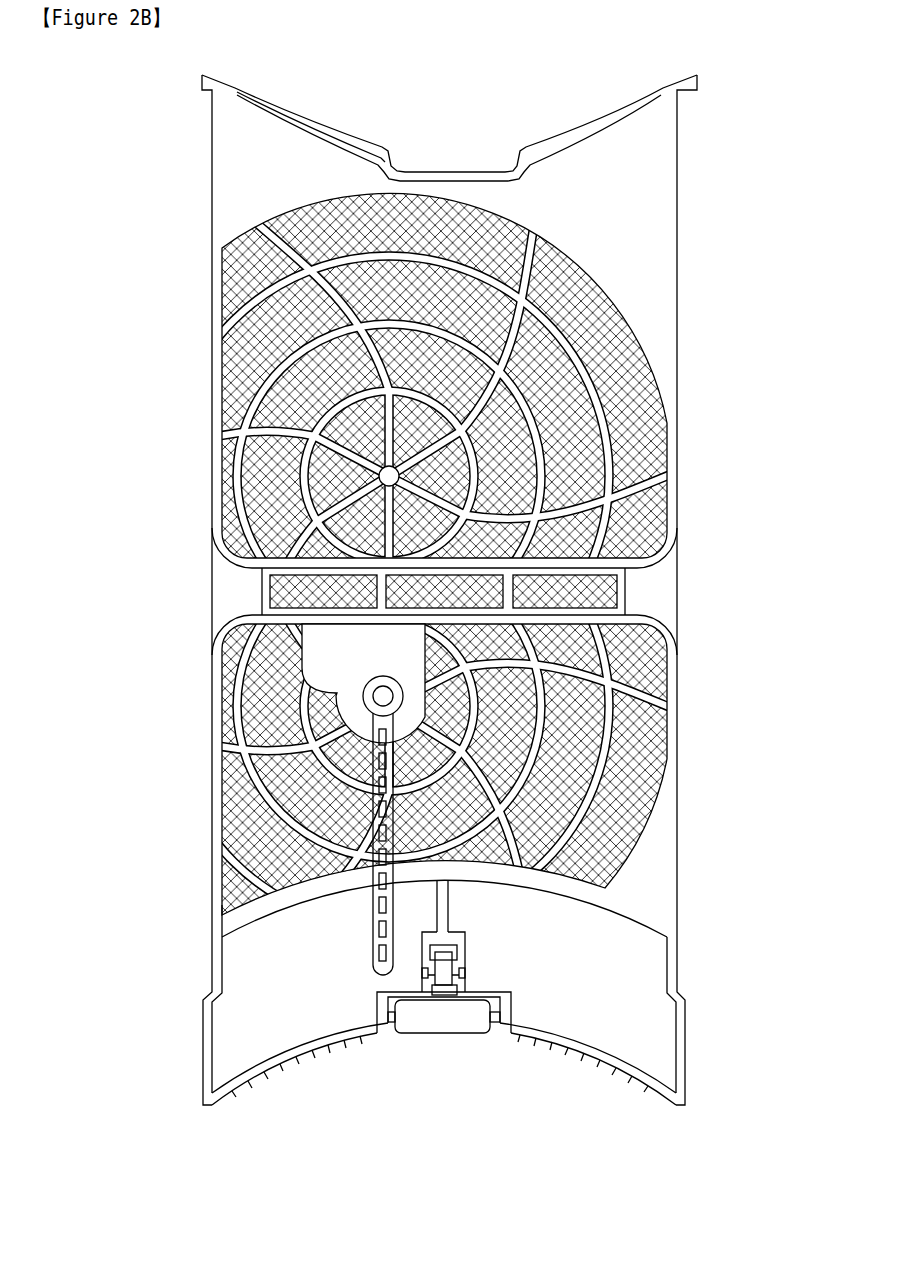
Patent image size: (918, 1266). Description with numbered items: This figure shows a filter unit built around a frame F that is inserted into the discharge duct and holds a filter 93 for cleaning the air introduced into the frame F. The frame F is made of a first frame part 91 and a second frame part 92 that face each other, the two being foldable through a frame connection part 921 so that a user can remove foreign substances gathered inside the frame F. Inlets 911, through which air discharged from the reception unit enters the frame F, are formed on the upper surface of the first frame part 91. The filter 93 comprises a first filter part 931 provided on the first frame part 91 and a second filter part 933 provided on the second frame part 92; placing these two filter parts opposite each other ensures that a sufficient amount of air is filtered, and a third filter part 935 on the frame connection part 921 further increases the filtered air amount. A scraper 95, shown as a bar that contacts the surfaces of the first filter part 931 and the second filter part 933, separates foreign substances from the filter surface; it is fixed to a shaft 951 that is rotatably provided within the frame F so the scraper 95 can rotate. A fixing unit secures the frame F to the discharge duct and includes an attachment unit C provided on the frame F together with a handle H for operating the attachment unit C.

The frame F is at (182, 163).
The second frame part 92 is at (670, 240).
The filter 93 is at (113, 485).
The second filter part 933 is at (640, 423).
The third filter part 935 is at (262, 582).
The frame connection part 921 is at (613, 588).
The first filter part 931 is at (258, 690).
The scraper 95 is at (271, 825).
The shaft 951 is at (380, 697).
The first frame part 91 is at (655, 857).
The inlets 911 is at (245, 1082).
The handle H is at (430, 1023).
The attachment unit C is at (447, 968).